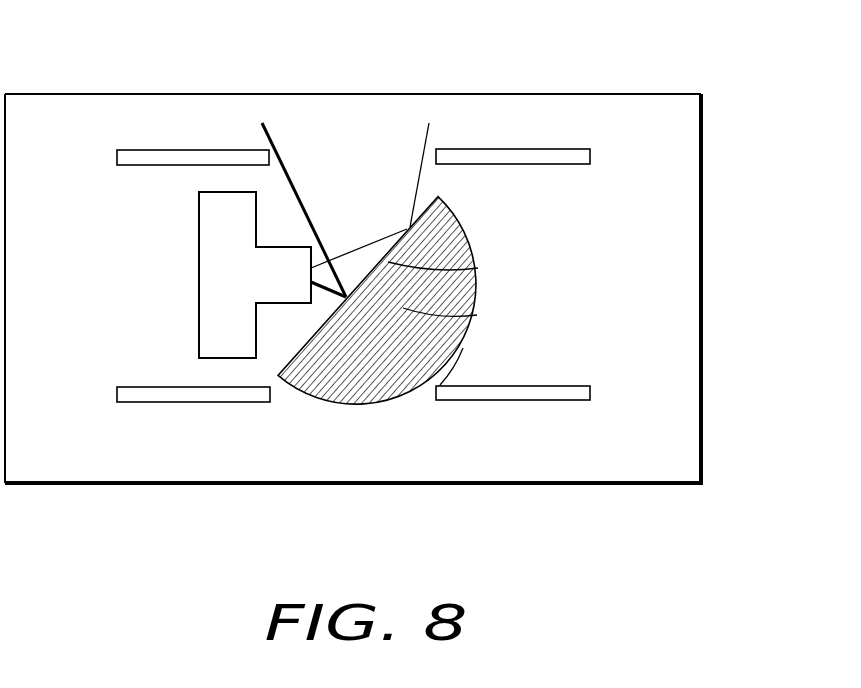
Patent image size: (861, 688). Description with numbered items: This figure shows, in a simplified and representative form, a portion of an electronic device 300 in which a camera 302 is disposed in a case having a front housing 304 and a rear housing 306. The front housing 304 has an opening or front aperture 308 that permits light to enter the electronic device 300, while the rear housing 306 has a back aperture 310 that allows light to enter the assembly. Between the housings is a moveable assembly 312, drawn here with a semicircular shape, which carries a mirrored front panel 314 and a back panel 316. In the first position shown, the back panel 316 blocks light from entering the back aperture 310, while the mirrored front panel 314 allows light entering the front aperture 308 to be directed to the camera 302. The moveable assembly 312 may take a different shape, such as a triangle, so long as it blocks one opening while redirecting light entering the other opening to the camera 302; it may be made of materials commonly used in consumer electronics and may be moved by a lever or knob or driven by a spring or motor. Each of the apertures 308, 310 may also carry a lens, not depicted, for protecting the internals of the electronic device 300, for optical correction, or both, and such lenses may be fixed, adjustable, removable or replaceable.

The electronic device 300 is at (714, 140).
The camera 302 is at (207, 267).
The front housing 304 is at (183, 150).
The rear housing 306 is at (150, 402).
The front aperture 308 is at (332, 148).
The back aperture 310 is at (338, 418).
The moveable assembly 312 is at (477, 315).
The mirrored front panel 314 is at (478, 268).
The back panel 316 is at (463, 348).